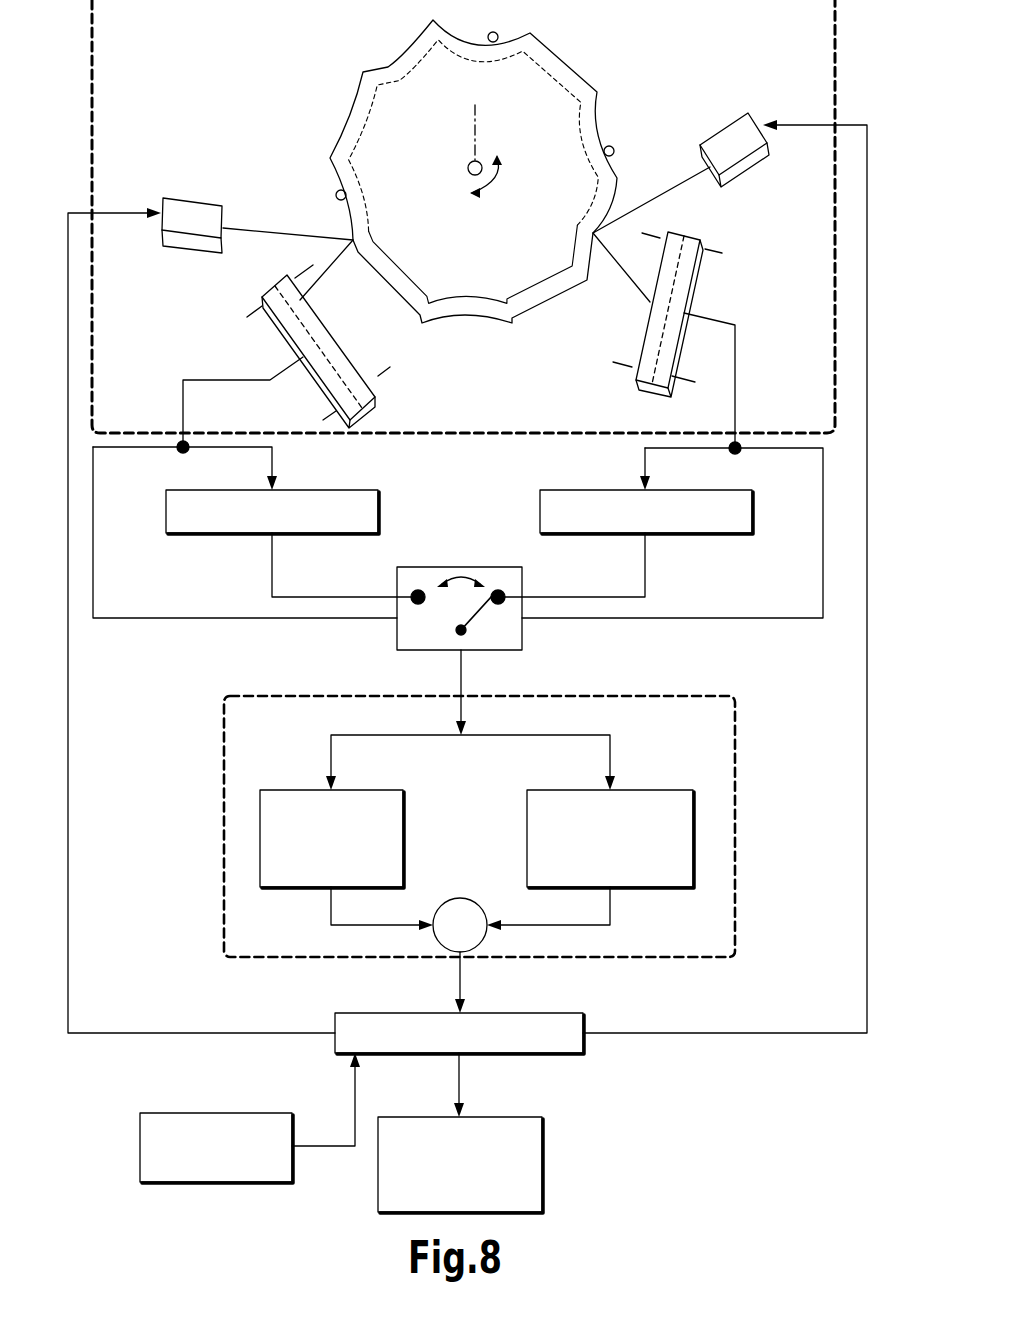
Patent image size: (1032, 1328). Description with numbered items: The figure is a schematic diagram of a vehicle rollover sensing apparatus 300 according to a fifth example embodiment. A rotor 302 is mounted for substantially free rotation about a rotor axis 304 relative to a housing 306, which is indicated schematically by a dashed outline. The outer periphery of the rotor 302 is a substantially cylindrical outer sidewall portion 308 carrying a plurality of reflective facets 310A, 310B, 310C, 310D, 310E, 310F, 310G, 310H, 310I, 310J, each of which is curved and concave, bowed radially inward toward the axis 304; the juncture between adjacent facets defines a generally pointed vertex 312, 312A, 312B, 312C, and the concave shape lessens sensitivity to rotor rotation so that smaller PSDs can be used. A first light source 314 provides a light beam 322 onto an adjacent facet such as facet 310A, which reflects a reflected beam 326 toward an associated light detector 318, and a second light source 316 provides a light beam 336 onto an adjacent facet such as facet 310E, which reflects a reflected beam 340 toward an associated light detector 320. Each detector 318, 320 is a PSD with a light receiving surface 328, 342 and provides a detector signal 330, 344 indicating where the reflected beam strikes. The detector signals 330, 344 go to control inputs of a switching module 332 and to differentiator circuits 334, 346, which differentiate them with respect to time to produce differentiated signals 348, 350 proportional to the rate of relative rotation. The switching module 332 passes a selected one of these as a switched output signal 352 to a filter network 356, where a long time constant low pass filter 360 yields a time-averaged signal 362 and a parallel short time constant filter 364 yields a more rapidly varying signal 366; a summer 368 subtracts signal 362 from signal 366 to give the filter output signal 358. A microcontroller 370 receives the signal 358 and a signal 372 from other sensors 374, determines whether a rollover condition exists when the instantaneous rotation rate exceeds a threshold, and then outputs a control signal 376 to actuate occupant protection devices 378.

The vehicle rollover sensing apparatus 300 is at (876, 238).
The rotor 302 is at (585, 86).
The rotor axis 304 is at (475, 105).
The housing 306 is at (838, 40).
The outer sidewall portion 308 is at (484, 325).
The reflective facet 310A is at (346, 195).
The reflective facet 310B is at (377, 270).
The reflective facet 310C is at (452, 313).
The reflective facet 310D is at (545, 288).
The reflective facet 310E is at (598, 207).
The reflective facet 310F is at (604, 151).
The reflective facet 310G is at (560, 70).
The reflective facet 310H is at (493, 42).
The reflective facet 310I is at (388, 67).
The reflective facet 310J is at (345, 137).
The vertex 312 is at (430, 22).
The vertex 312A is at (355, 253).
The vertex 312B is at (420, 325).
The vertex 312C is at (520, 328).
The first light source 314 is at (210, 200).
The second light source 316 is at (725, 123).
The light detector 318 is at (258, 283).
The light detector 320 is at (697, 280).
The light beam 322 is at (250, 228).
The reflected beam 326 is at (337, 258).
The light receiving surface 328 is at (376, 382).
The detector signal 330 is at (240, 380).
The switching module 332 is at (440, 567).
The differentiator circuit 334 is at (378, 515).
The light beam 336 is at (672, 182).
The reflected beam 340 is at (617, 253).
The light receiving surface 342 is at (683, 332).
The detector signal 344 is at (737, 378).
The differentiator circuit 346 is at (710, 533).
The differentiated signal 348 is at (272, 555).
The differentiated signal 350 is at (645, 562).
The switched output signal 352 is at (461, 672).
The filter network 356 is at (735, 853).
The filter output signal 358 is at (462, 995).
The low pass filter 360 is at (260, 826).
The signal 362 is at (331, 912).
The filter 364 is at (638, 790).
The signal 366 is at (610, 897).
The summer 368 is at (463, 898).
The microcontroller 370 is at (575, 1055).
The signal 372 is at (338, 1150).
The other sensors 374 is at (263, 1113).
The control signal 376 is at (461, 1075).
The occupant protection devices 378 is at (542, 1145).